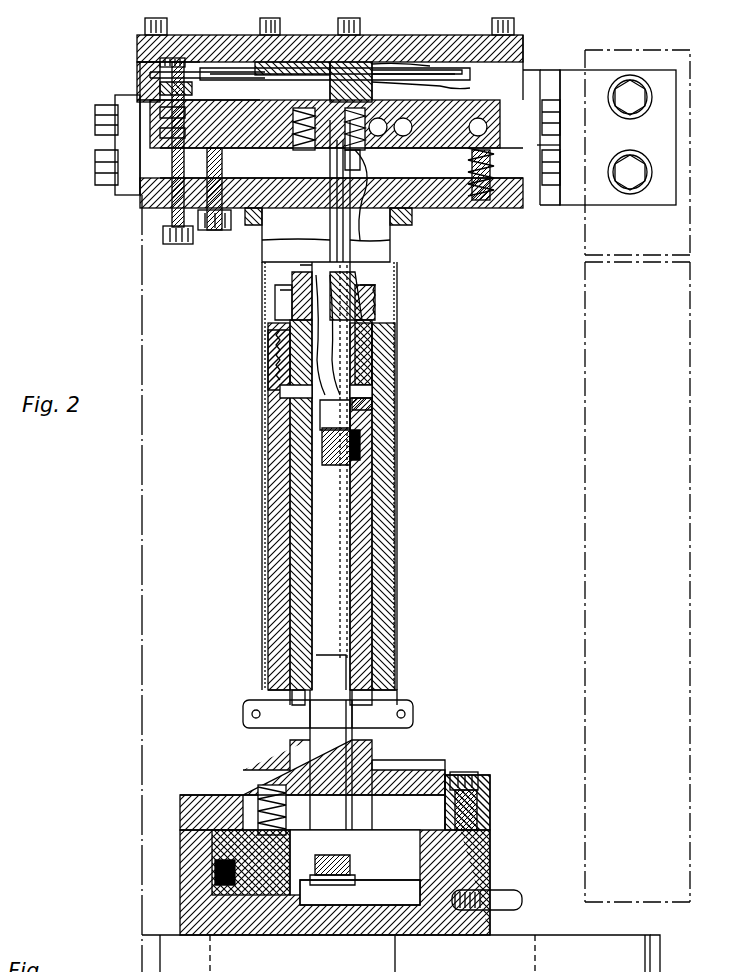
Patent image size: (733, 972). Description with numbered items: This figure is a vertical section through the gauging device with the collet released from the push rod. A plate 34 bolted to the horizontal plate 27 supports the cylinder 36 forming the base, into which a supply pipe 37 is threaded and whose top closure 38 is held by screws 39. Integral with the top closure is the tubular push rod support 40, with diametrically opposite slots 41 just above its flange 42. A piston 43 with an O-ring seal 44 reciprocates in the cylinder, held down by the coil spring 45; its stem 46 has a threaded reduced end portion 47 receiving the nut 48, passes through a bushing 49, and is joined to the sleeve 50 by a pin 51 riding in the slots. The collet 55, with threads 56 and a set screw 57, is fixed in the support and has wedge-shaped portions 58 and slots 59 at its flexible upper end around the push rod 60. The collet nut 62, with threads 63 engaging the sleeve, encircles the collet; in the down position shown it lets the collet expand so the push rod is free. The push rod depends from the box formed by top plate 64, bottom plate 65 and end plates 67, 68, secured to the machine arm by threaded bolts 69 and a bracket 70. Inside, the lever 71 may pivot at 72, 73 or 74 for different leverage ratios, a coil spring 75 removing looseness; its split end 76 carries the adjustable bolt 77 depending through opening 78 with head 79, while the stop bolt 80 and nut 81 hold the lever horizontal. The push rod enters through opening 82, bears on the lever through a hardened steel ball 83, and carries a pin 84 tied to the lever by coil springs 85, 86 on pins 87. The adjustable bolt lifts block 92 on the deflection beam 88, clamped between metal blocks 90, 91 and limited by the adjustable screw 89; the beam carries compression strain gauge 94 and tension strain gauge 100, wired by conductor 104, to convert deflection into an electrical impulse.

The horizontal plate 27 is at (598, 965).
The plate 34 is at (540, 948).
The cylinder 36 is at (178, 870).
The supply pipe 37 is at (508, 888).
The top closure 38 is at (428, 790).
The screws 39 is at (470, 775).
The tubular push rod support 40 is at (355, 575).
The slots 41 is at (372, 700).
The flange 42 is at (243, 772).
The piston 43 is at (245, 887).
The O-ring seal 44 is at (215, 850).
The coil spring 45 is at (258, 805).
The stem 46 is at (320, 755).
The reduced end portion 47 is at (360, 905).
The nut 48 is at (310, 905).
The bushing 49 is at (380, 790).
The sleeve 50 is at (282, 514).
The pin 51 is at (405, 705).
The collet 55 is at (335, 415).
The threads 56 is at (352, 450).
The set screw 57 is at (372, 395).
The wedge-shaped portions 58 is at (300, 290).
The slots 59 is at (333, 328).
The push rod 60 is at (330, 558).
The collet nut 62 is at (290, 320).
The threads 63 is at (268, 360).
The top plate 64 is at (515, 48).
The bottom plate 65 is at (523, 208).
The end plate 67 is at (115, 150).
The end plate 68 is at (537, 142).
The threaded bolts 69 is at (95, 118).
The bracket 70 is at (665, 96).
The lever 71 is at (450, 180).
The pivot support 72 is at (500, 105).
The pivot support 73 is at (410, 136).
The pivot support 74 is at (382, 136).
The coil spring 75 is at (488, 195).
The split 76 is at (160, 112).
The adjustable bolt 77 is at (165, 133).
The opening 78 is at (150, 200).
The head 79 is at (165, 235).
The stop member 80 is at (172, 190).
The nut 81 is at (214, 230).
The opening 82 is at (330, 200).
The hardened steel ball 83 is at (335, 115).
The pin 84 is at (373, 238).
The coil spring 85 is at (293, 150).
The coil spring 86 is at (372, 195).
The pins 87 is at (372, 85).
The deflection beam 88 is at (165, 62).
The adjustable screw 89 is at (160, 40).
The metal block 90 is at (285, 62).
The metal block 91 is at (260, 75).
The block 92 is at (160, 75).
The compression strain gauge 94 is at (170, 50).
The tension strain gauge 100 is at (275, 85).
The conductor 104 is at (440, 78).